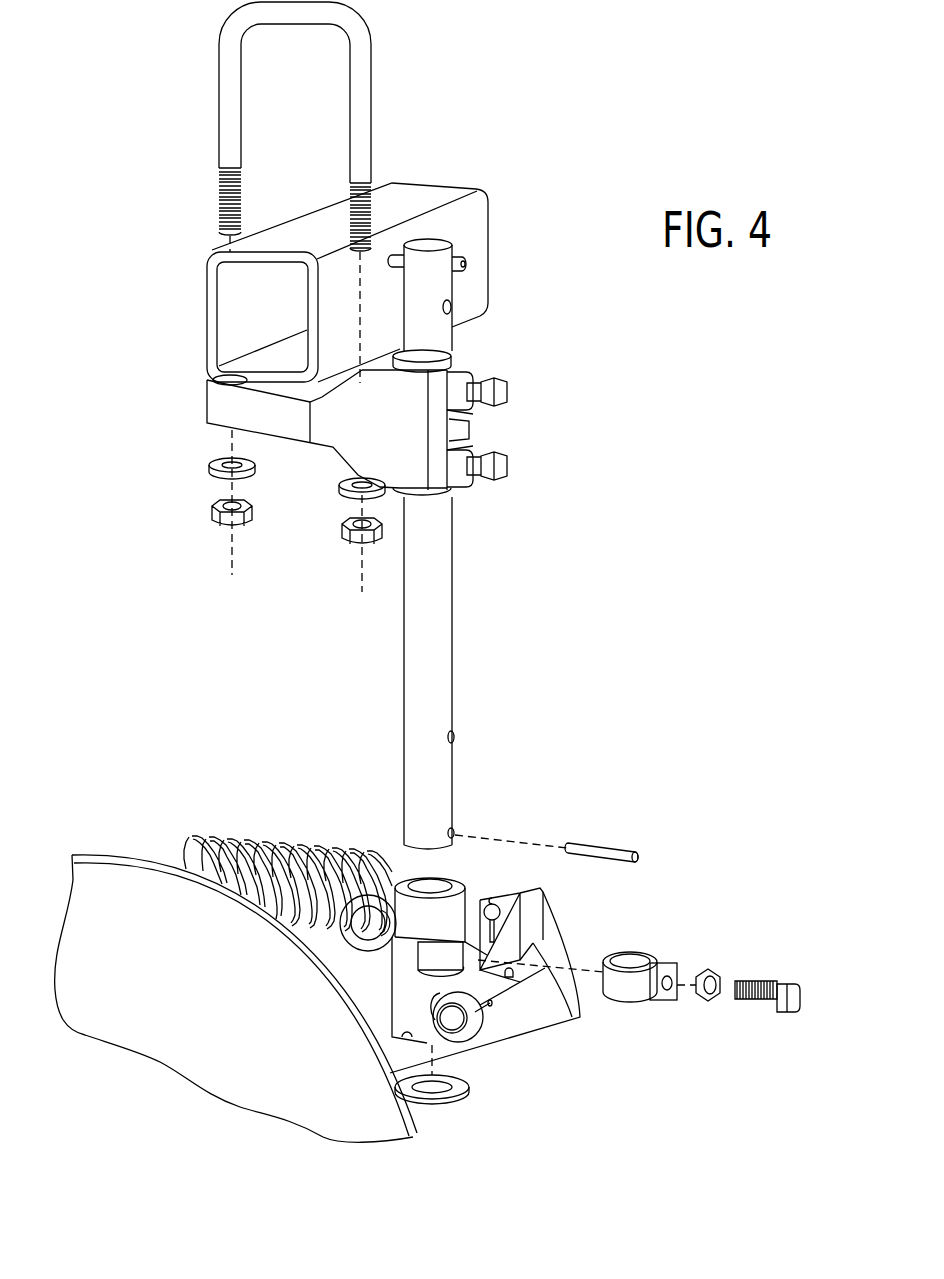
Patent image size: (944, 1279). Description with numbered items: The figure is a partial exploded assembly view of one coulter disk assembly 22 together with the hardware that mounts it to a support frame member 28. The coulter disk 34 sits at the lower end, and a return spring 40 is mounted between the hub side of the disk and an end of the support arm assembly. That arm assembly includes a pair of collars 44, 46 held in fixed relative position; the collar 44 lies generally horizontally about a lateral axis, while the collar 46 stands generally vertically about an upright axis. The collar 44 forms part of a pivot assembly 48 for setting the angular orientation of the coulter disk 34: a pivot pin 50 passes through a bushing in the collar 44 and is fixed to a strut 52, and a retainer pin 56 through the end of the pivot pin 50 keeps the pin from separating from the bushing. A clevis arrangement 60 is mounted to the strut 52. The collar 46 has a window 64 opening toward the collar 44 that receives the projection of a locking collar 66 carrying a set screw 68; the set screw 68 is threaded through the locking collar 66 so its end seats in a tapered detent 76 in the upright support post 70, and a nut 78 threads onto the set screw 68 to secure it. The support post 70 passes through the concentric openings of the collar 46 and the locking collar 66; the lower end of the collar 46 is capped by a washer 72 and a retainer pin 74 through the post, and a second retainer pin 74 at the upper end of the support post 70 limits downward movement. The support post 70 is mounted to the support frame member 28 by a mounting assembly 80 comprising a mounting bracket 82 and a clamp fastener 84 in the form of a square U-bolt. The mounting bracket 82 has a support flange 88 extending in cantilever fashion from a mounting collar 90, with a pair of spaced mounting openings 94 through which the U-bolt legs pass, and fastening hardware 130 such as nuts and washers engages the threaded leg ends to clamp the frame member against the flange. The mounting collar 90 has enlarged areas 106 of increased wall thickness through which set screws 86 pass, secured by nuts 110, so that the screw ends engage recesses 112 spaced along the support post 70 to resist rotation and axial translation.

The coulter disk assembly 22 is at (187, 658).
The support frame member 28 is at (476, 210).
The coulter disk 34 is at (95, 857).
The return spring 40 is at (300, 852).
The collar 44 is at (509, 1023).
The collar 46 is at (405, 967).
The pivot assembly 48 is at (430, 1013).
The pivot pin 50 is at (450, 1027).
The strut 52 is at (577, 1002).
The retainer pin 56 is at (517, 967).
The clevis arrangement 60 is at (548, 908).
The window 64 is at (430, 940).
The locking collar 66 is at (660, 963).
The set screw 68 is at (797, 1000).
The support post 70 is at (433, 652).
The washer 72 is at (453, 1090).
The retainer pin 74 is at (464, 262).
The detent 76 is at (455, 738).
The nut 78 is at (712, 975).
The mounting assembly 80 is at (582, 345).
The mounting bracket 82 is at (328, 452).
The clamp fastener 84 is at (372, 112).
The set screw 86 is at (496, 388).
The support flange 88 is at (223, 410).
The mounting collar 90 is at (462, 360).
The mounting opening 94 is at (213, 373).
The enlarged area 106 is at (478, 372).
The nut 110 is at (478, 432).
The recess 112 is at (451, 307).
The fastening hardware 130 is at (218, 515).